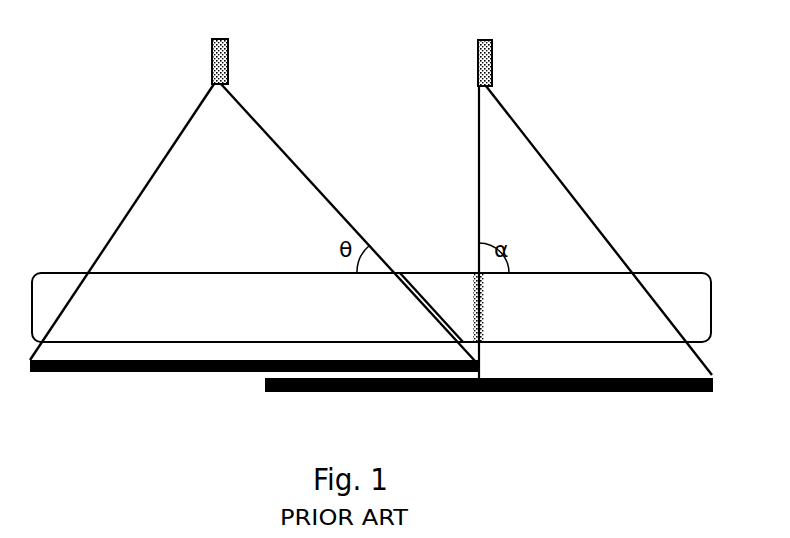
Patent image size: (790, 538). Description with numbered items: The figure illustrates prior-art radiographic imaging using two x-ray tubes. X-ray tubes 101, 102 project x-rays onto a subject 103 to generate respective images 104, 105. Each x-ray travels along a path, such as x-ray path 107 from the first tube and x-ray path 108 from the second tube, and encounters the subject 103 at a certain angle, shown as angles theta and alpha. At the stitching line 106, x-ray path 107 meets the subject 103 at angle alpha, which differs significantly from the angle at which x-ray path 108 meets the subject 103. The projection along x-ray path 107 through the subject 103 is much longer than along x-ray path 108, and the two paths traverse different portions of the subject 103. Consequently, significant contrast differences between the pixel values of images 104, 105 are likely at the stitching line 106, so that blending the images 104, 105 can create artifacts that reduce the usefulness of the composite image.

The x-ray tube 101 is at (228, 52).
The x-ray tube 102 is at (493, 55).
The subject 103 is at (711, 292).
The image 104 is at (131, 374).
The image 105 is at (640, 394).
The stitching line 106 is at (478, 396).
The x-ray path 107 is at (286, 150).
The x-ray path 108 is at (475, 124).